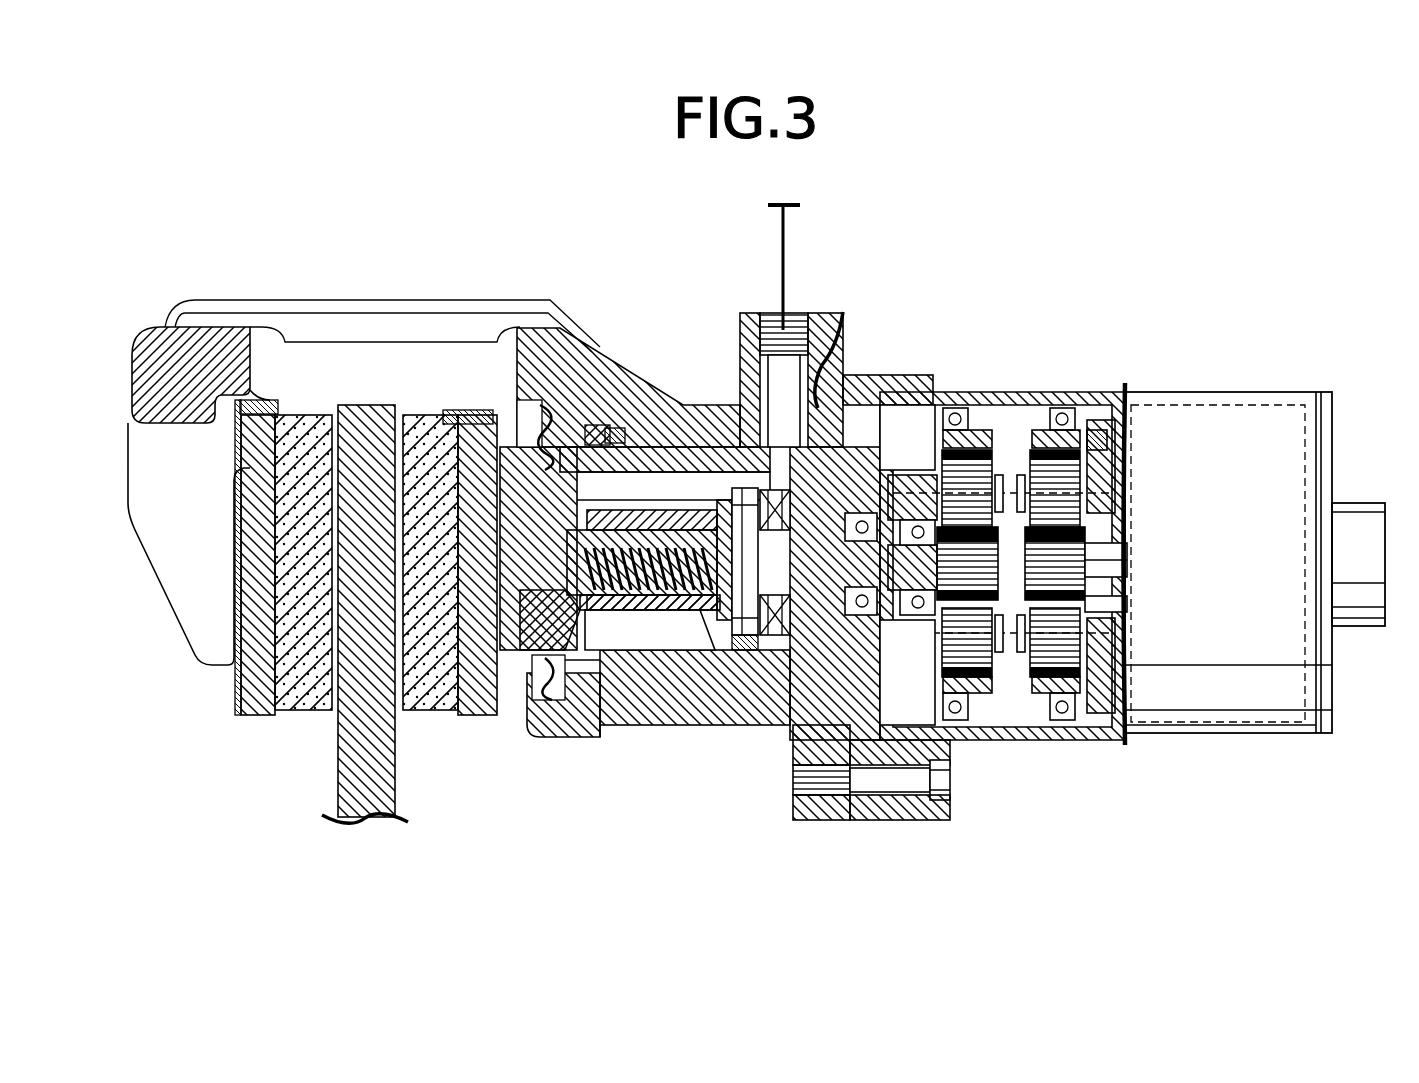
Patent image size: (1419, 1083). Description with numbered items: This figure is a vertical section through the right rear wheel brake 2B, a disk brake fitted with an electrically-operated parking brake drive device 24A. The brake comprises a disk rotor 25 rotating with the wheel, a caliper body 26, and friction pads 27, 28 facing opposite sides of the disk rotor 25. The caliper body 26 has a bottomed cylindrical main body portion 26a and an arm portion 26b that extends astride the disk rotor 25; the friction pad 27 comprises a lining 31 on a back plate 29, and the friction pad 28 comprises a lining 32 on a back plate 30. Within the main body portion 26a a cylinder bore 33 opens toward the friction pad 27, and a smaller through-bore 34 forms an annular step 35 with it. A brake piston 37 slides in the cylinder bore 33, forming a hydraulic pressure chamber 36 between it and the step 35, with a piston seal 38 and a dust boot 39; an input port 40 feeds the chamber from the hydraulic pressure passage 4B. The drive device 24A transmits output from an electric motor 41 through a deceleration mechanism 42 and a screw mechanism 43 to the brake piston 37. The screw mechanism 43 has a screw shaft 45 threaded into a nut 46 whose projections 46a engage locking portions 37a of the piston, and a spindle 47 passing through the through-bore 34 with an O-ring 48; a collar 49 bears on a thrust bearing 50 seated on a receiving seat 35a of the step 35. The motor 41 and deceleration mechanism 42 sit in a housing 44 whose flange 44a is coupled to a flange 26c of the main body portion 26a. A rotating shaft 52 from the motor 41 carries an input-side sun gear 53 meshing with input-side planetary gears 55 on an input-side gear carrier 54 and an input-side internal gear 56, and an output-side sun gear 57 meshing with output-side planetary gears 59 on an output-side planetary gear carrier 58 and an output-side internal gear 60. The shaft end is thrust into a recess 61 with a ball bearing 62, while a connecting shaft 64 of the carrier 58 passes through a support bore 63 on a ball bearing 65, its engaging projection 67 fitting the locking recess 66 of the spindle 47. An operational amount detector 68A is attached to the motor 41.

The right rear wheel brake 2B is at (420, 292).
The arm portion 26b is at (172, 348).
The friction pad 28 is at (222, 590).
The back plate 30 is at (253, 477).
The lining 32 is at (295, 712).
The lining 31 is at (420, 700).
The disk rotor 25 is at (342, 790).
The friction pad 27 is at (440, 735).
The back plate 29 is at (462, 428).
The caliper body 26 is at (592, 330).
The flange 26c is at (838, 340).
The input port 40 is at (787, 345).
The wheel brake-side hydraulic pressure passage 4B is at (780, 225).
The dust boot 39 is at (545, 425).
The brake piston 37 is at (598, 430).
The piston seal 38 is at (610, 435).
The cylinder bore 33 is at (683, 440).
The screw shaft 45 is at (648, 550).
The locking portions 37a is at (667, 625).
The receiving seat 35a is at (755, 515).
The thrust bearing 50 is at (755, 636).
The locking recess 66 is at (798, 545).
The engaging projection 67 is at (798, 575).
The hydraulic pressure chamber 36 is at (640, 640).
The nut 46 is at (690, 640).
The screw mechanism 43 is at (560, 650).
The main body portion 26a is at (552, 738).
The projections 46a is at (598, 740).
The collar 49 is at (740, 640).
The O-ring 48 is at (795, 778).
The output-side planetary gear carrier 58 is at (932, 782).
The spindle 47 is at (795, 805).
The flange 44a is at (877, 822).
The deceleration mechanism 42 is at (1010, 428).
The step 35 is at (862, 460).
The connecting shaft 64 is at (858, 512).
The ball bearing 65 is at (872, 618).
The support bore 63 is at (862, 640).
The through-bore 34 is at (862, 700).
The ball bearing 62 is at (925, 465).
The output-side internal gear 60 is at (990, 445).
The output-side sun gear 57 is at (1055, 450).
The recess 61 is at (972, 660).
The output-side planetary gears 59 is at (998, 657).
The input-side gear carrier 54 is at (1105, 472).
The input-side internal gear 56 is at (1105, 440).
The input-side planetary gears 55 is at (1110, 640).
The rotating shaft 52 is at (1100, 548).
The input-side sun gear 53 is at (1100, 600).
The electrically-operated parking brake drive device 24A is at (1110, 385).
The electric motor 41 is at (1242, 403).
The housing 44 is at (1147, 742).
The operational amount detector 68A is at (1355, 512).